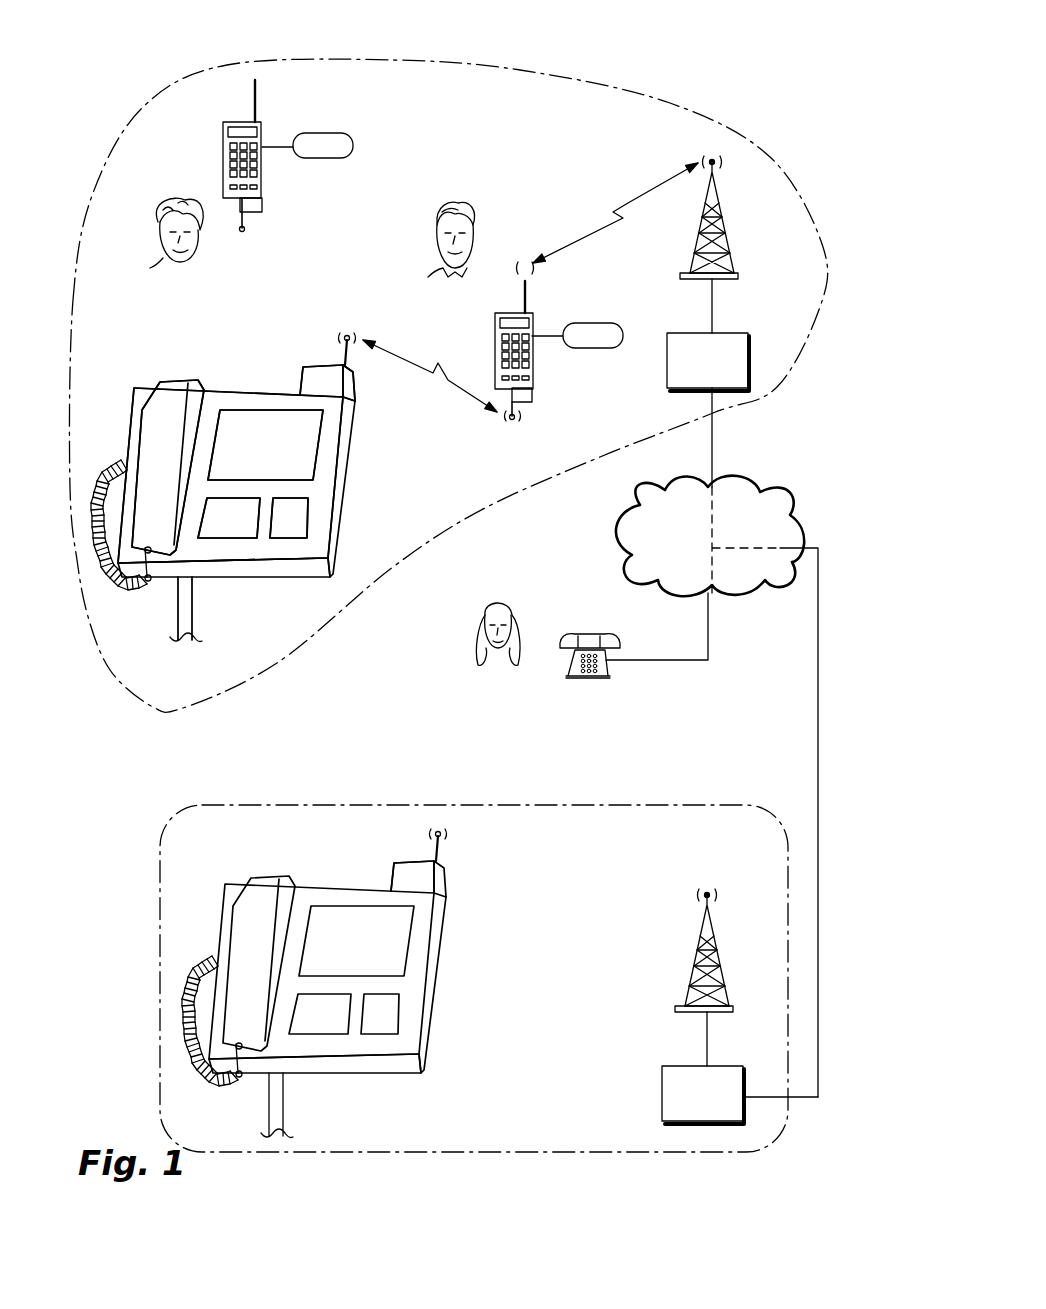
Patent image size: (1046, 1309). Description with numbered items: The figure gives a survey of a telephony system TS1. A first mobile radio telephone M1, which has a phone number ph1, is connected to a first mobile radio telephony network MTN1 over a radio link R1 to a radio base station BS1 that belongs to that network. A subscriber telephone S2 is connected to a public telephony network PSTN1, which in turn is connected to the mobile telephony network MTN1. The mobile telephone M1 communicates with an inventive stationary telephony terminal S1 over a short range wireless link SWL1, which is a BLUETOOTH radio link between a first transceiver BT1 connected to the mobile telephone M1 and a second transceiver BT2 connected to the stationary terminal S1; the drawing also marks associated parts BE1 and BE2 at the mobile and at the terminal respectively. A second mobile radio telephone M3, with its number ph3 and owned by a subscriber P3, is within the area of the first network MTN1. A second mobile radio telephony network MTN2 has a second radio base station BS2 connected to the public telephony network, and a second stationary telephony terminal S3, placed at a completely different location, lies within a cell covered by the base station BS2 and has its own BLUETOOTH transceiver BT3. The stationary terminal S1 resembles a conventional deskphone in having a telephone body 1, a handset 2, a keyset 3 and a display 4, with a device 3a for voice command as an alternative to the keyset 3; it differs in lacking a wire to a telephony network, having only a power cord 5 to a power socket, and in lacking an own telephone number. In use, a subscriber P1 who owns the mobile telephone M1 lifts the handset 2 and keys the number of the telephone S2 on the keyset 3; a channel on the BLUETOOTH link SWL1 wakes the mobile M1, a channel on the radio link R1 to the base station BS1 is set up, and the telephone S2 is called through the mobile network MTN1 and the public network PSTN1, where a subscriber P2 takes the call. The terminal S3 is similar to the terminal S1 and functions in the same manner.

The telephony system TS1 is at (170, 80).
The first mobile radio telephony network MTN1 is at (738, 270).
The second mobile radio telephony network MTN2 is at (395, 805).
The second mobile radio telephone M3 is at (223, 137).
The phone number ph3 is at (307, 145).
The subscriber P3 is at (173, 245).
The subscriber P1 is at (439, 247).
The first mobile radio telephone M1 is at (495, 325).
The phone number ph1 is at (577, 335).
The Bluetooth unit of mobile M1 BE1 is at (534, 396).
The first BLUETOOTH transceiver BT1 is at (528, 402).
The radio link R1 is at (628, 198).
The short range wireless link SWL1 is at (407, 349).
The radio base station BS1 is at (722, 243).
The public telephony network PSTN1 is at (790, 500).
The subscriber P2 is at (492, 662).
The subscriber telephone S2 is at (592, 677).
The stationary telephony terminal S1 is at (247, 483).
The handset 2 is at (170, 400).
The display 4 is at (268, 453).
The keyset 3 is at (238, 528).
The device for voice command 3a is at (301, 528).
The telephone body 1 is at (323, 480).
The second BLUETOOTH transceiver BT2 is at (327, 378).
The Bluetooth transceiver of station S1 BE2 is at (353, 398).
The power cord 5 is at (178, 620).
The second stationary telephony terminal S3 is at (345, 979).
The BLUETOOTH transceiver BT3 is at (417, 873).
The second radio base station BS2 is at (717, 980).